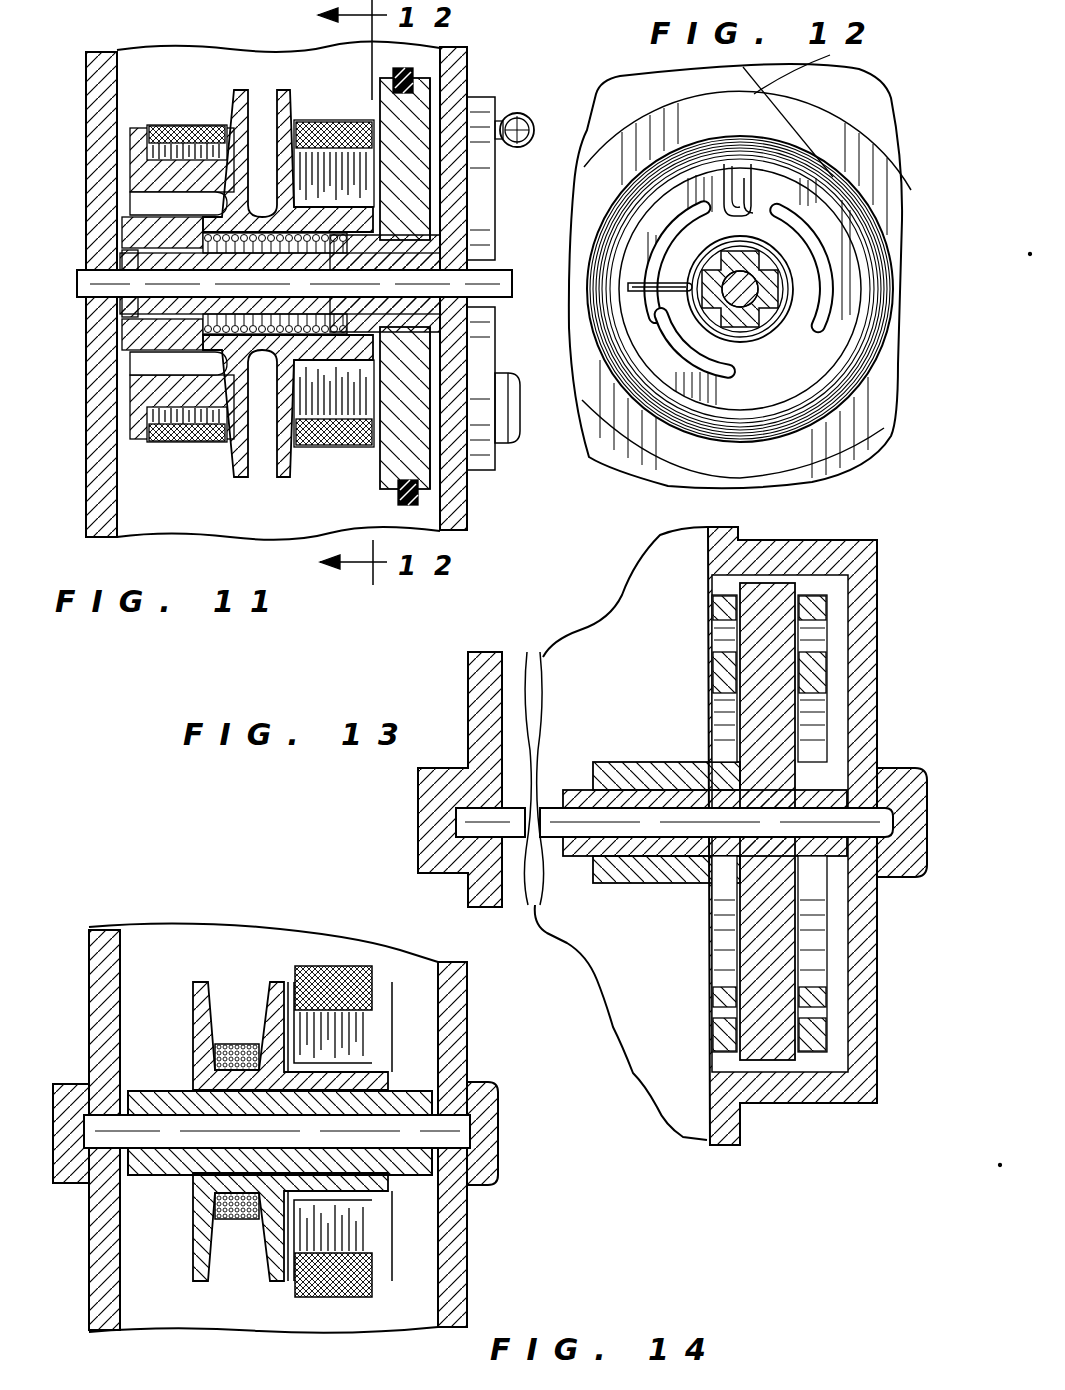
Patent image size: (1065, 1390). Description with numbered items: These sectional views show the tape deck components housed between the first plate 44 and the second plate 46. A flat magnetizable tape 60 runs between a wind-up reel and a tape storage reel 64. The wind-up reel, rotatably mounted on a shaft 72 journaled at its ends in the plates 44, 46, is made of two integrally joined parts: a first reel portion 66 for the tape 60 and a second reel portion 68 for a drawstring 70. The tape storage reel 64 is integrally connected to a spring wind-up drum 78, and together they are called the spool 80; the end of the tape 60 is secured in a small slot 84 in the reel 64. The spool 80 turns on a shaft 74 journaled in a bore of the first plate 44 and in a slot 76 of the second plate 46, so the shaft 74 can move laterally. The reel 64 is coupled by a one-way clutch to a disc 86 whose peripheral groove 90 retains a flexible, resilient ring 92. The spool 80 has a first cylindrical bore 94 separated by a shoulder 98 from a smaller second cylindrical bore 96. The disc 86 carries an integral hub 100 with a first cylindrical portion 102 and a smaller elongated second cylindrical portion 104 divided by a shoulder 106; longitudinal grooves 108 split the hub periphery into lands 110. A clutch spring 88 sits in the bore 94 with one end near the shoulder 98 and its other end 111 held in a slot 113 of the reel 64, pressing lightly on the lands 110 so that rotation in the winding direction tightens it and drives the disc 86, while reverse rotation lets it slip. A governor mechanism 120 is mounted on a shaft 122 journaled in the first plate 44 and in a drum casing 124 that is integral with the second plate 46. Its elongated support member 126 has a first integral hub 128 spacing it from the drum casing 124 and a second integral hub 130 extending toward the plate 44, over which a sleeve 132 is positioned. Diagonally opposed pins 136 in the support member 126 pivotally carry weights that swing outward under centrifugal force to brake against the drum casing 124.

In FIG. 11, the first plate 44 is at (86, 140).
In FIG. 13, the first plate 44 is at (478, 681).
In FIG. 14, the first plate 44 is at (104, 1019).
In FIG. 11, the second plate 46 is at (467, 68).
In FIG. 13, the second plate 46 is at (725, 1124).
In FIG. 14, the second plate 46 is at (456, 1050).
In FIG. 11, the tape 60 is at (350, 133).
In FIG. 12, the tape 60 is at (738, 192).
In FIG. 14, the tape 60 is at (325, 975).
In FIG. 11, the tape storage reel 64 is at (290, 113).
In FIG. 12, the tape storage reel 64 is at (650, 126).
In FIG. 14, the first reel portion 66 is at (387, 1256).
In FIG. 14, the second reel portion 68 is at (219, 1177).
In FIG. 14, the drawstring 70 is at (243, 1225).
In FIG. 14, the shaft 72 is at (441, 1131).
In FIG. 11, the shaft 74 is at (500, 283).
In FIG. 12, the shaft 74 is at (750, 296).
In FIG. 11, the slot 76 is at (485, 290).
In FIG. 11, the spring wind-up drum 78 is at (237, 106).
In FIG. 11, the spool 80 is at (259, 84).
In FIG. 12, the slot 84 is at (752, 199).
In FIG. 11, the disc 86 is at (418, 130).
In FIG. 11, the clutch spring 88 is at (318, 302).
In FIG. 12, the clutch spring 88 is at (780, 267).
In FIG. 11, the peripheral groove 90 is at (415, 470).
In FIG. 11, the ring 92 is at (413, 500).
In FIG. 11, the first cylindrical bore 94 is at (232, 338).
In FIG. 11, the second cylindrical bore 96 is at (160, 311).
In FIG. 11, the shoulder 98 is at (217, 335).
In FIG. 11, the hub 100 is at (293, 262).
In FIG. 11, the first cylindrical portion 102 is at (373, 322).
In FIG. 11, the second elongated cylindrical portion 104 is at (143, 263).
In FIG. 11, the shoulder 106 is at (347, 248).
In FIG. 12, the longitudinal grooves 108 is at (786, 300).
In FIG. 12, the lands 110 is at (744, 332).
In FIG. 12, the other end of clutch spring 111 is at (636, 280).
In FIG. 12, the slot 113 is at (629, 287).
In FIG. 13, the governor mechanism 120 is at (640, 644).
In FIG. 13, the shaft 122 is at (574, 817).
In FIG. 13, the drum casing 124 is at (877, 997).
In FIG. 13, the support member 126 is at (753, 760).
In FIG. 13, the first integral hub 128 is at (830, 797).
In FIG. 13, the second integral hub 130 is at (687, 847).
In FIG. 13, the sleeve 132 is at (628, 876).
In FIG. 13, the second pair of pins 136 is at (712, 648).